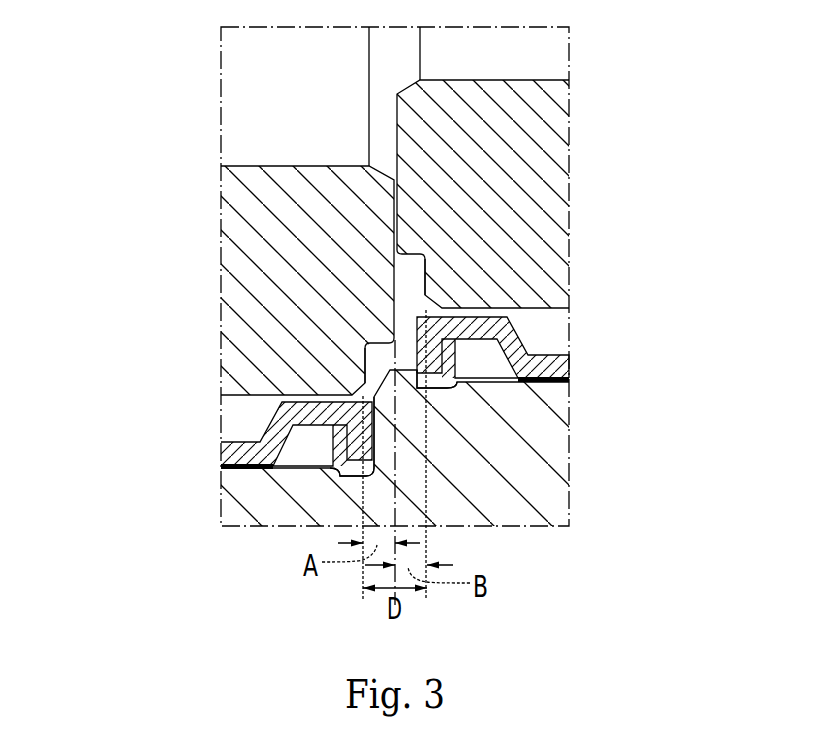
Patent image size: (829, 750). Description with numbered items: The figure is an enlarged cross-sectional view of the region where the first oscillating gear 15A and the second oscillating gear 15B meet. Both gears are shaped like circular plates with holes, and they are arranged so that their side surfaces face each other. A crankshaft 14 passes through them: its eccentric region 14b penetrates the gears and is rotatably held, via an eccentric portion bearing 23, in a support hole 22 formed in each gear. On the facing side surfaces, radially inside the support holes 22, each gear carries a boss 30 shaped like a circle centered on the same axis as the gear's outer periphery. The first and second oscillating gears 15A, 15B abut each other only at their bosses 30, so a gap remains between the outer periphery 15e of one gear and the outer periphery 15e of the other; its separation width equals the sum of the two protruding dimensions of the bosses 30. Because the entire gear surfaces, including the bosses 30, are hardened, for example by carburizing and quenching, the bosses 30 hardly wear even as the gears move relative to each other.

The crankshaft 14 is at (571, 478).
The eccentric region 14b is at (300, 468).
The first oscillating gear 15A is at (219, 285).
The second oscillating gear 15B is at (571, 285).
The outer periphery 15e is at (364, 383).
The support hole 22 is at (237, 399).
The eccentric portion bearing 23 is at (278, 442).
The boss 30 is at (394, 237).